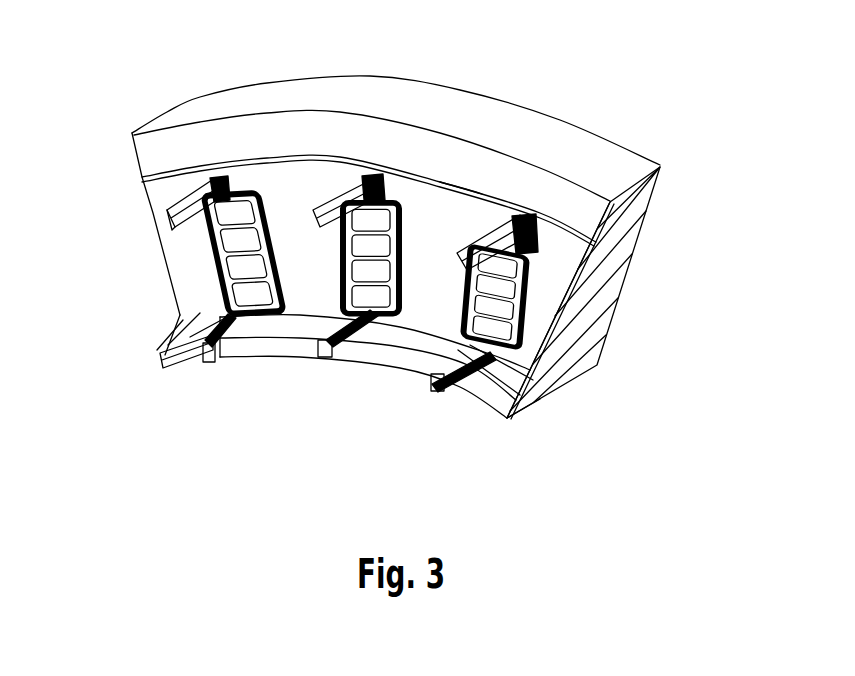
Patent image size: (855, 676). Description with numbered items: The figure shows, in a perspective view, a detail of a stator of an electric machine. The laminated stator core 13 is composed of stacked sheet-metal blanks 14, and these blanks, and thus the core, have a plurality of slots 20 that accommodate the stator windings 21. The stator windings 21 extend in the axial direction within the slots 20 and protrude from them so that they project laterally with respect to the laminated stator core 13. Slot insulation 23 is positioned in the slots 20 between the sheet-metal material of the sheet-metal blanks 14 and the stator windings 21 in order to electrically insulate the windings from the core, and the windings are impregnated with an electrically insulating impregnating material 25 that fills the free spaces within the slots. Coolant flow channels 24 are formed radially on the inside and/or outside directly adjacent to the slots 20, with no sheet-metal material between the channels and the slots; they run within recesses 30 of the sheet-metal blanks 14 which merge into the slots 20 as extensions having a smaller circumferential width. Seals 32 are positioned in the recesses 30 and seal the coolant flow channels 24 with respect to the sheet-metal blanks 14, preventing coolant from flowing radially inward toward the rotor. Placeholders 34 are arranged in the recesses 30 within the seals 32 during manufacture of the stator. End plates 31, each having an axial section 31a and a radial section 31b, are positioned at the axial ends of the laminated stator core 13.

The laminated stator core 13 is at (388, 143).
The sheet-metal blanks 14 is at (156, 224).
The slots 20 is at (190, 337).
The stator windings 21 is at (236, 296).
The slot insulation 23 is at (392, 196).
The coolant flow channels 24 is at (198, 192).
The impregnating material 25 is at (262, 198).
The recesses 30 is at (212, 192).
The end plates 31 is at (384, 370).
The axial section 31a is at (455, 224).
The radial section 31b is at (527, 407).
The seals 32 is at (364, 178).
The placeholders 34 is at (167, 220).